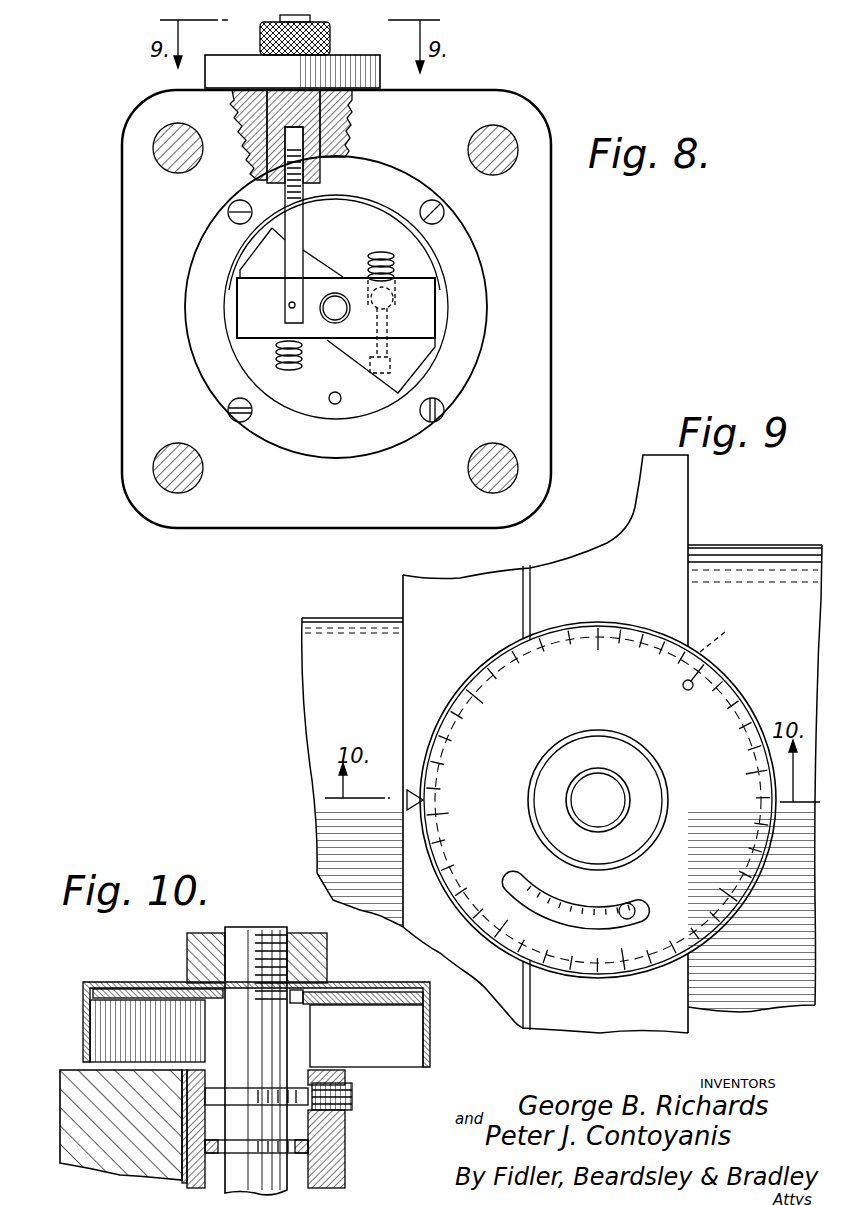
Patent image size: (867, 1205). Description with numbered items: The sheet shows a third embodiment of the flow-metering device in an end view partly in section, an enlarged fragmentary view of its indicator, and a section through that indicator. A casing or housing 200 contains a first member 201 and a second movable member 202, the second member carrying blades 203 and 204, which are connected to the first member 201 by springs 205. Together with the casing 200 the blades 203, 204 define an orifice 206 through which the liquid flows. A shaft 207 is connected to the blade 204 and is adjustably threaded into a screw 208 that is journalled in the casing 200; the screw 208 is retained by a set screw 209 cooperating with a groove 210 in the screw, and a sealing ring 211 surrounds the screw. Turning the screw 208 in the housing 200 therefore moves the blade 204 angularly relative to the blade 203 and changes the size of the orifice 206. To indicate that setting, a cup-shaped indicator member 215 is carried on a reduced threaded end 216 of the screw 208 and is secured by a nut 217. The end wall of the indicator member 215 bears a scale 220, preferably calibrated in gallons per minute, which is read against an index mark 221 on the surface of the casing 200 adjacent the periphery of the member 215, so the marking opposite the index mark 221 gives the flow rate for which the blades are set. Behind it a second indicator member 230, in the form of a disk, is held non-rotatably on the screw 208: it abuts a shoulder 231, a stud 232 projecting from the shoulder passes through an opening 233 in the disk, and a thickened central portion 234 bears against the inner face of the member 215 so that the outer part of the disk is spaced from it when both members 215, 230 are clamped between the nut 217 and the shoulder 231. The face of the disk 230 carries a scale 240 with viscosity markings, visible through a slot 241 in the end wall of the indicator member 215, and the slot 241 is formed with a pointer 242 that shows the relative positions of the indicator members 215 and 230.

In FIG. 8, the casing or housing 200 is at (560, 303).
In FIG. 9, the casing or housing 200 is at (497, 621).
In FIG. 10, the casing or housing 200 is at (123, 1126).
In FIG. 8, the first member 201 is at (466, 255).
In FIG. 8, the second movable member 202 is at (346, 274).
In FIG. 8, the blade 203 is at (412, 358).
In FIG. 8, the blade 204 is at (425, 308).
In FIG. 8, the springs 205 is at (293, 363).
In FIG. 8, the orifice 206 is at (333, 407).
In FIG. 8, the shaft 207 is at (300, 245).
In FIG. 8, the screw 208 is at (330, 173).
In FIG. 10, the screw 208 is at (284, 1173).
In FIG. 10, the set screw 209 is at (345, 1107).
In FIG. 8, the groove 210 is at (267, 107).
In FIG. 10, the groove 210 is at (250, 1097).
In FIG. 8, the sealing ring 211 is at (333, 127).
In FIG. 10, the sealing ring 211 is at (310, 1146).
In FIG. 8, the indicator member 215 is at (281, 80).
In FIG. 9, the indicator member 215 is at (446, 699).
In FIG. 10, the indicator member 215 is at (436, 1043).
In FIG. 9, the reduced threaded end 216 is at (615, 808).
In FIG. 10, the reduced threaded end 216 is at (247, 928).
In FIG. 8, the nut 217 is at (331, 33).
In FIG. 9, the nut 217 is at (590, 722).
In FIG. 10, the nut 217 is at (187, 948).
In FIG. 9, the scale 220 is at (743, 708).
In FIG. 9, the index mark 221 is at (413, 812).
In FIG. 9, the indicator member 230 is at (736, 638).
In FIG. 10, the indicator member 230 is at (380, 1007).
In FIG. 10, the shoulder 231 is at (243, 993).
In FIG. 10, the stud 232 is at (297, 1003).
In FIG. 10, the opening 233 is at (303, 1005).
In FIG. 10, the thickened central portion 234 is at (337, 985).
In FIG. 9, the scale 240 is at (633, 930).
In FIG. 9, the slot 241 is at (629, 908).
In FIG. 9, the pointer 242 is at (574, 912).